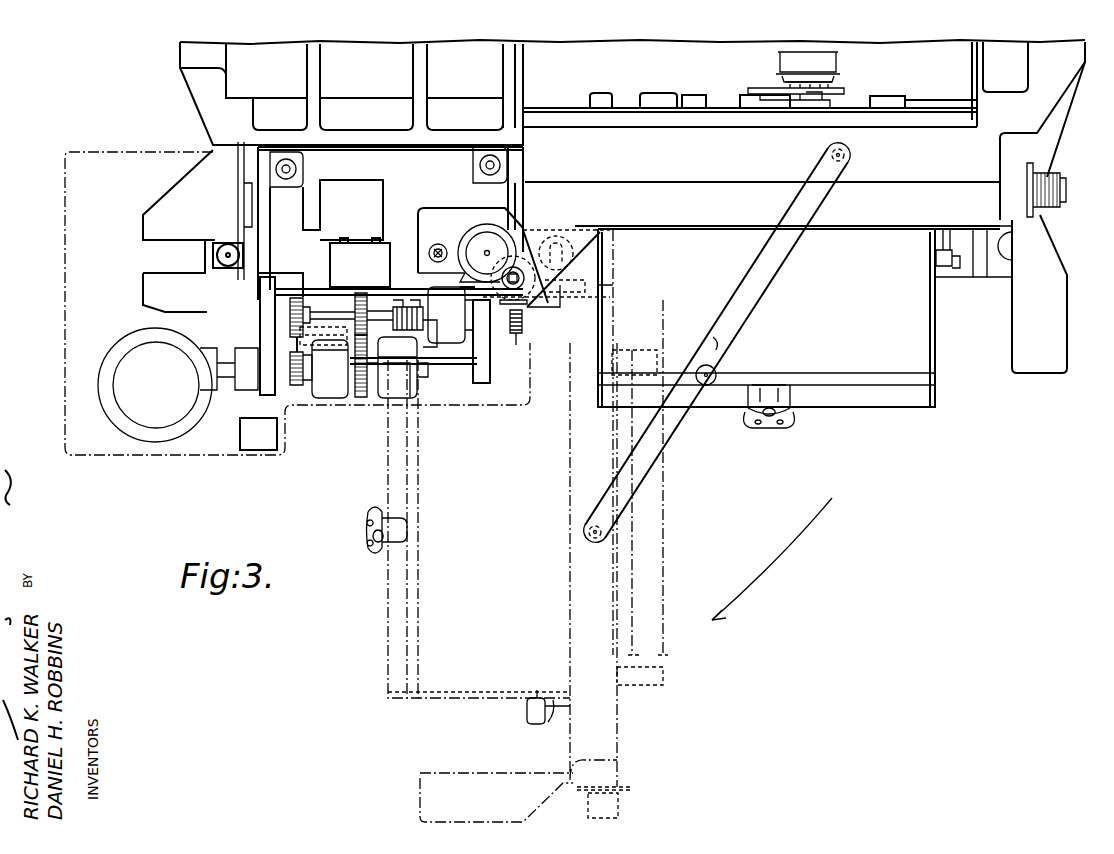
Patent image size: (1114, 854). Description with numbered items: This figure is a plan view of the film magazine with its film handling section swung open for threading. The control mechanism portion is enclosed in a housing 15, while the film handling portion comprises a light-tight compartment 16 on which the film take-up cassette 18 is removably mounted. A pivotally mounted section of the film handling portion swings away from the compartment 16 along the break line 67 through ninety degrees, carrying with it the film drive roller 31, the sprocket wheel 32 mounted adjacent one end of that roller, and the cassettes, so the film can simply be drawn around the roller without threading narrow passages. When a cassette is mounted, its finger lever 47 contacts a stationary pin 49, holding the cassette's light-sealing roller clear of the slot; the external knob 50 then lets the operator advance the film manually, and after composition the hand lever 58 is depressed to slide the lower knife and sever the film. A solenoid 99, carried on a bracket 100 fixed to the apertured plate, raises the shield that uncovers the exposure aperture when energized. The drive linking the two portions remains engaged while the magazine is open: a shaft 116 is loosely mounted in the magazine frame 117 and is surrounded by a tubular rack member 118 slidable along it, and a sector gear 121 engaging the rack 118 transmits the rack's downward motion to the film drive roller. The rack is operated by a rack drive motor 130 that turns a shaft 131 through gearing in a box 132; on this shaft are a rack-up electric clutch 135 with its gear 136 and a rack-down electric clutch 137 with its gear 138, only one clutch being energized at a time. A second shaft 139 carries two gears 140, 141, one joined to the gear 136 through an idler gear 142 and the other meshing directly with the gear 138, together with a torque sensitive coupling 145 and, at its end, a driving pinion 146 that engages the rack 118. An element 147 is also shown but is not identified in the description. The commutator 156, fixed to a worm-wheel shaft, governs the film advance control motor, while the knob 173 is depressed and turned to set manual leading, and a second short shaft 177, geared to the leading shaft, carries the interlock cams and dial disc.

The housing 15 is at (65, 306).
The light-tight compartment 16 is at (875, 214).
The film take-up cassette 18 is at (886, 407).
The film drive roller 31 is at (663, 502).
The sprocket wheel 32 is at (668, 655).
The finger lever 47 is at (946, 268).
The stationary pin 49 is at (950, 238).
The external knob 50 is at (1052, 176).
The hand lever 58 is at (1048, 372).
The break line 67 is at (749, 181).
The solenoid 99 is at (782, 63).
The bracket 100 is at (832, 90).
The shaft 116 is at (520, 265).
The magazine frame 117 is at (541, 303).
The tubular rack member 118 is at (540, 297).
The sector gear 121 is at (512, 206).
The rack drive motor 130 is at (118, 414).
The shaft 131 is at (226, 366).
The box 132 is at (146, 346).
The rack-up electric clutch 135 is at (337, 400).
The gear 136 is at (300, 386).
The rack-down electric clutch 137 is at (400, 398).
The gear 138 is at (362, 398).
The second shaft 139 is at (337, 314).
The gear 140 is at (297, 297).
The gear 141 is at (363, 296).
The idler gear 142 is at (328, 344).
The torque sensitive coupling 145 is at (440, 340).
The driving pinion 146 is at (516, 336).
The coupling 147 is at (413, 296).
The commutator 156 is at (240, 174).
The knob 173 is at (478, 246).
The second short shaft 177 is at (432, 246).